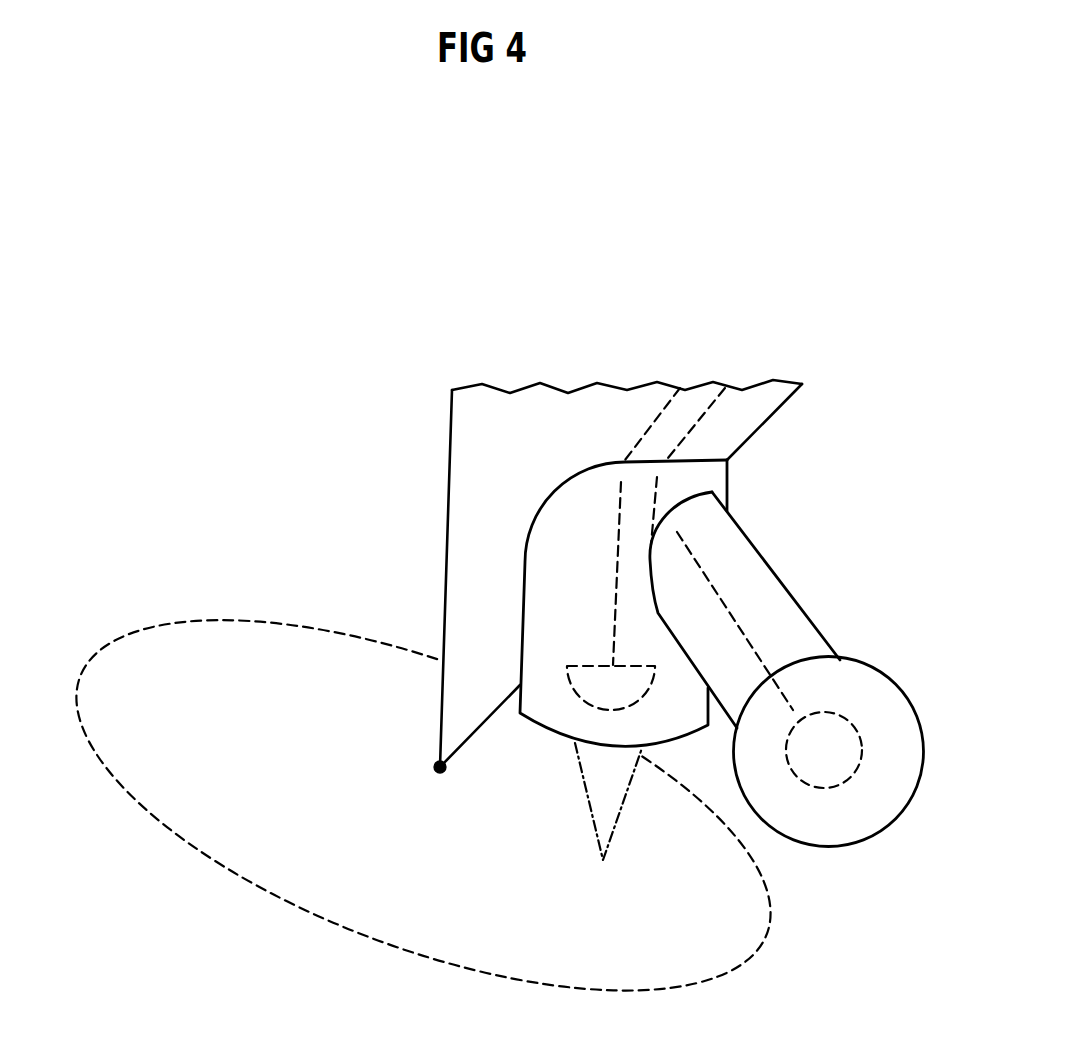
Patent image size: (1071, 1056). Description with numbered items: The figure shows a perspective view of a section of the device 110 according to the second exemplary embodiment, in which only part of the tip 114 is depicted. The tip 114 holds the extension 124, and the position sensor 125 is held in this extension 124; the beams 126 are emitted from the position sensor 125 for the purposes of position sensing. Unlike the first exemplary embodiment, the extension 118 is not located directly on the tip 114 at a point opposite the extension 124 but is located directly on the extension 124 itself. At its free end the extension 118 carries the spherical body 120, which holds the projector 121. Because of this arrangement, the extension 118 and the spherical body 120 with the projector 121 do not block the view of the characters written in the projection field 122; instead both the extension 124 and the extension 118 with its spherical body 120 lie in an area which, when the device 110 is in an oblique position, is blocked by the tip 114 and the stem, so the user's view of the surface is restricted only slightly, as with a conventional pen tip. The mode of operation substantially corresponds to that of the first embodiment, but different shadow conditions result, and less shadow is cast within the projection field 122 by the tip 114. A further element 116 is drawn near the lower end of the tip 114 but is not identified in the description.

The device 110 is at (734, 267).
The tip 114 is at (458, 432).
The pivot point 116 is at (432, 768).
The extension 118 is at (768, 580).
The spherical body 120 is at (830, 824).
The projector 121 is at (837, 773).
The projection field 122 is at (233, 622).
The extension 124 is at (727, 477).
The position sensor 125 is at (589, 665).
The beams 126 is at (592, 817).